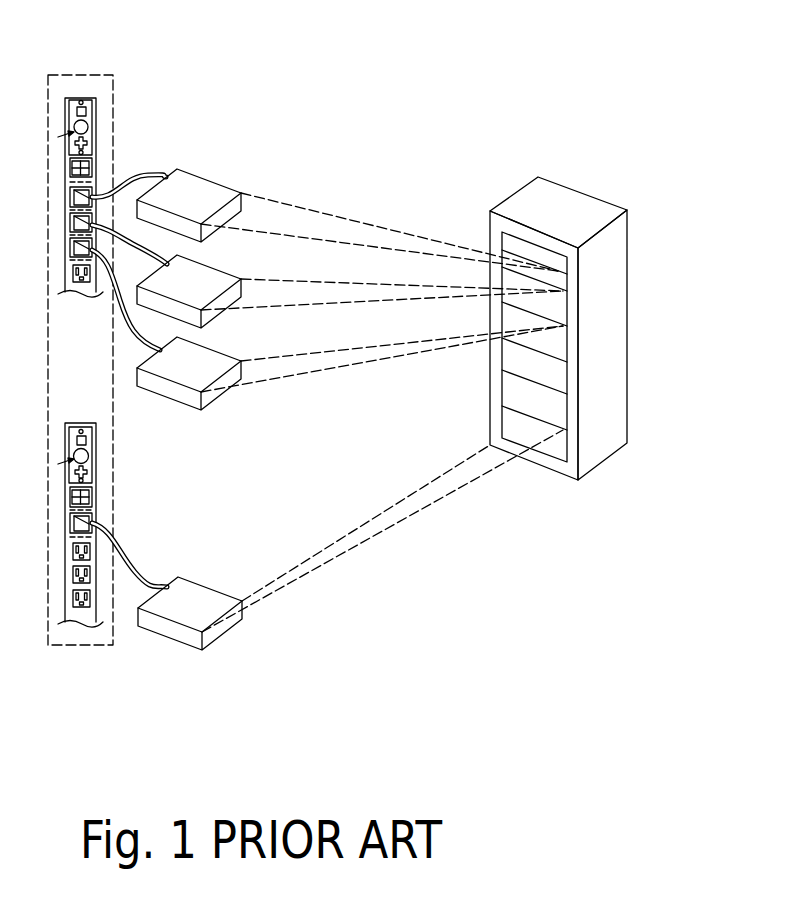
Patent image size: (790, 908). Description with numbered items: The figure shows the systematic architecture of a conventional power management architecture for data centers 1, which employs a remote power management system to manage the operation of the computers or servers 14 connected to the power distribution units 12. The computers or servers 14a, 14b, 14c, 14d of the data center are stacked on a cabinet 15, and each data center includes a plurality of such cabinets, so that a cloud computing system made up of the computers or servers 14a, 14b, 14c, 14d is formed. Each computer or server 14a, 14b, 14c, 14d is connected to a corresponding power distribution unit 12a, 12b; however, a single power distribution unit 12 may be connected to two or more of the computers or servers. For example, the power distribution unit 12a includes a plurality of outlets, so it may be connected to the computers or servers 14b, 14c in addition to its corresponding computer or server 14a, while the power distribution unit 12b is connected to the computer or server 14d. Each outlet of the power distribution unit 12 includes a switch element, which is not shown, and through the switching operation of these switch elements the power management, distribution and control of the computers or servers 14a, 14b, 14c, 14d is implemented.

The conventional power management architecture for data centers 1 is at (471, 92).
The power distribution units 12 is at (88, 67).
The power distribution unit 12a is at (97, 149).
The power distribution unit 12b is at (97, 478).
The computers or servers 14 is at (295, 154).
The computer or server 14a is at (188, 194).
The computer or server 14b is at (188, 279).
The computer or server 14c is at (188, 362).
The computer or server 14d is at (198, 600).
The cabinet 15 is at (583, 193).